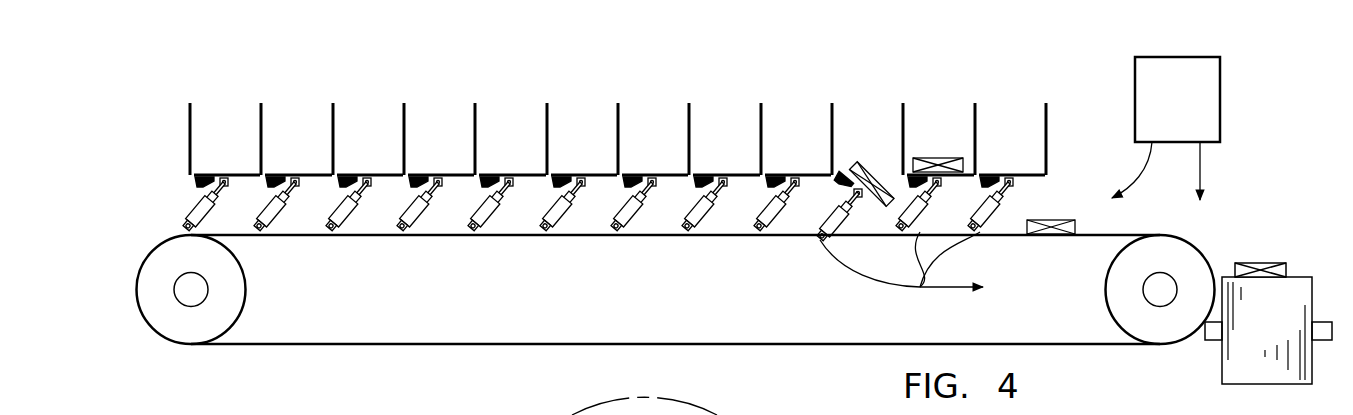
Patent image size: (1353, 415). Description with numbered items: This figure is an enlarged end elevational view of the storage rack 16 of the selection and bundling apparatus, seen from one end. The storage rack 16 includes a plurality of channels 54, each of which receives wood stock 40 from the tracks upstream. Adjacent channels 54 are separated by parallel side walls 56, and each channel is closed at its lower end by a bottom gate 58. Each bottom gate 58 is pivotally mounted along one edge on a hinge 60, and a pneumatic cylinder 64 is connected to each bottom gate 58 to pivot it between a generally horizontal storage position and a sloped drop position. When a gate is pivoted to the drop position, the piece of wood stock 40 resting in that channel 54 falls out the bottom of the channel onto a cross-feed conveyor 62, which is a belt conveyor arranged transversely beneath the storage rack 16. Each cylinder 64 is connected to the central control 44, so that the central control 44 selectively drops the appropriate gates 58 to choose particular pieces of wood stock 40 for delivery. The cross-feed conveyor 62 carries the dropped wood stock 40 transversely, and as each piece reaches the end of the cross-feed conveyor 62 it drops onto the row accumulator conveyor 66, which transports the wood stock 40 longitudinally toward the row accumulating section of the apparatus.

The storage rack 16 is at (250, 82).
The parallel side walls 56 is at (403, 120).
The channels 54 is at (443, 124).
The bottom gate 58 is at (856, 176).
The hinge 60 is at (704, 184).
The pneumatic cylinder 64 is at (202, 218).
The wood stock 40 is at (858, 181).
The cross-feed conveyor 62 is at (383, 237).
The central control 44 is at (1182, 116).
The row accumulator conveyor 66 is at (1297, 277).